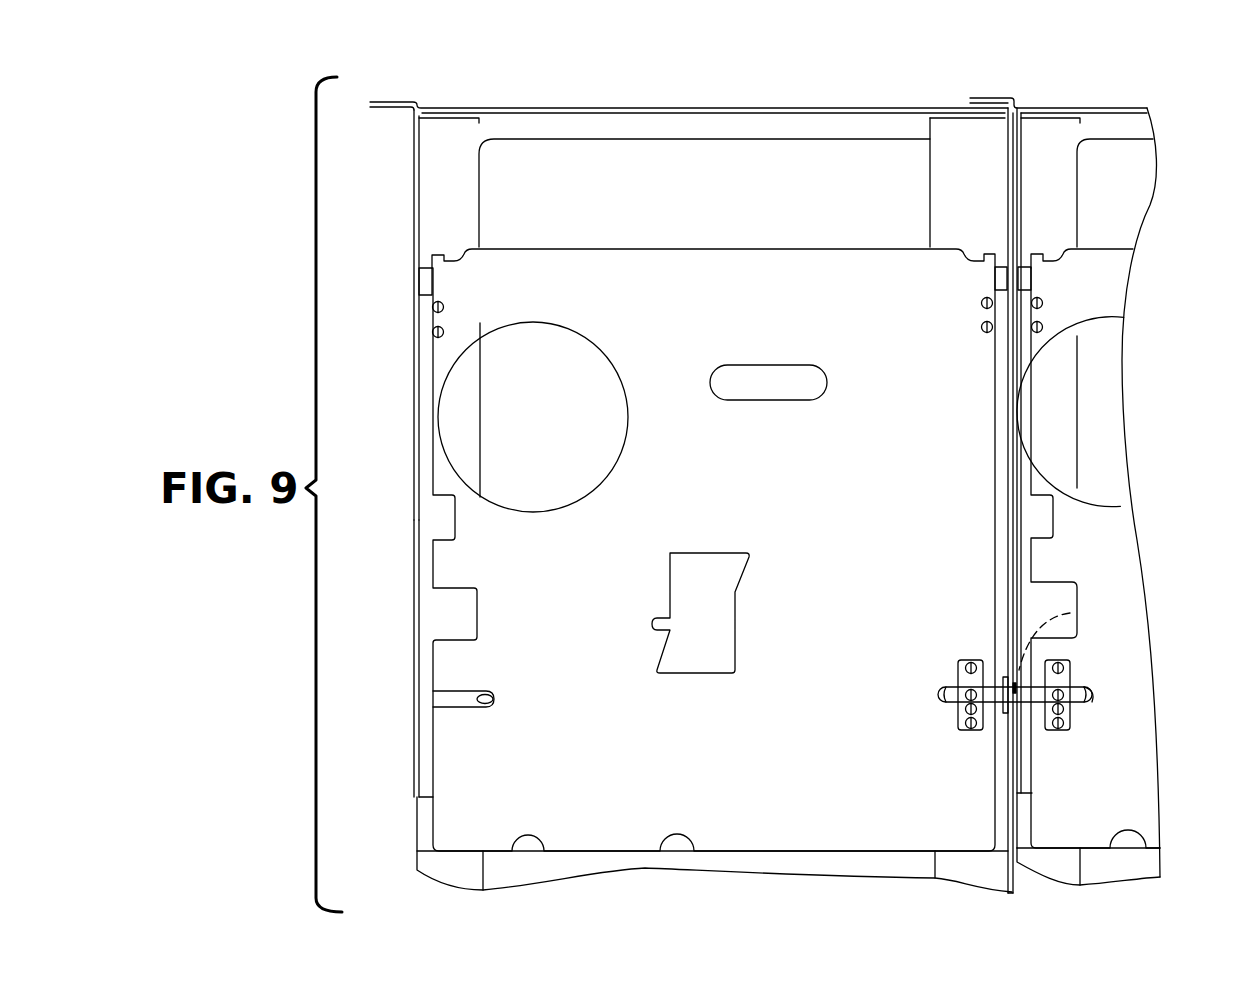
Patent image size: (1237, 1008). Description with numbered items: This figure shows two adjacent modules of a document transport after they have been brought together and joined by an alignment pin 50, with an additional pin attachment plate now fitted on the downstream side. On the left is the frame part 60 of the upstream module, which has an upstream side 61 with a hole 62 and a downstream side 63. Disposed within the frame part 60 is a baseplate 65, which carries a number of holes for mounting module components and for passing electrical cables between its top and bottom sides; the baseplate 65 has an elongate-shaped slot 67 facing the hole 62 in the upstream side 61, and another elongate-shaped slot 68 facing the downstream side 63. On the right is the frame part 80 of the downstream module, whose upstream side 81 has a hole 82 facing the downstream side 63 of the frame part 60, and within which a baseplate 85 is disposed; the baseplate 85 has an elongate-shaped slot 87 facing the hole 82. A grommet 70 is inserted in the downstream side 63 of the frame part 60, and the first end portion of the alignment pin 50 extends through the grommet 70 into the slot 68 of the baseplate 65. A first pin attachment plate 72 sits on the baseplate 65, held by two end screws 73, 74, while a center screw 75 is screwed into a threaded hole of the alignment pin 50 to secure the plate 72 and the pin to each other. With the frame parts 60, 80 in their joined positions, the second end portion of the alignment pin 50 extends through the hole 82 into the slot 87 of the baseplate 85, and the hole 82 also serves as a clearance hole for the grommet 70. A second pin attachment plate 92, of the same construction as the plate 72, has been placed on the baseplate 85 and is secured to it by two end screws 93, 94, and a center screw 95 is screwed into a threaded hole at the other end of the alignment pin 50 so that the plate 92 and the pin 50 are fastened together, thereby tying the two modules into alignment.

The alignment pin 50 is at (993, 683).
The frame part 60 is at (818, 100).
The upstream side 61 is at (414, 360).
The hole 62 is at (414, 701).
The downstream side 63 is at (1005, 440).
The baseplate 65 is at (713, 247).
The elongate-shaped slot 67 is at (494, 699).
The elongate-shaped slot 68 is at (938, 692).
The grommet 70 is at (1000, 735).
The first pin attachment plate 72 is at (958, 673).
The end screw 73 is at (968, 729).
The end screw 74 is at (968, 661).
The center screw 75 is at (960, 696).
The frame part 80 is at (1140, 100).
The upstream side 81 is at (1021, 375).
The hole 82 is at (1072, 613).
The baseplate 85 is at (1120, 246).
The elongate-shaped slot 87 is at (1072, 706).
The second pin attachment plate 92 is at (1072, 671).
The end screw 93 is at (1072, 724).
The end screw 94 is at (1072, 662).
The center screw 95 is at (1092, 694).